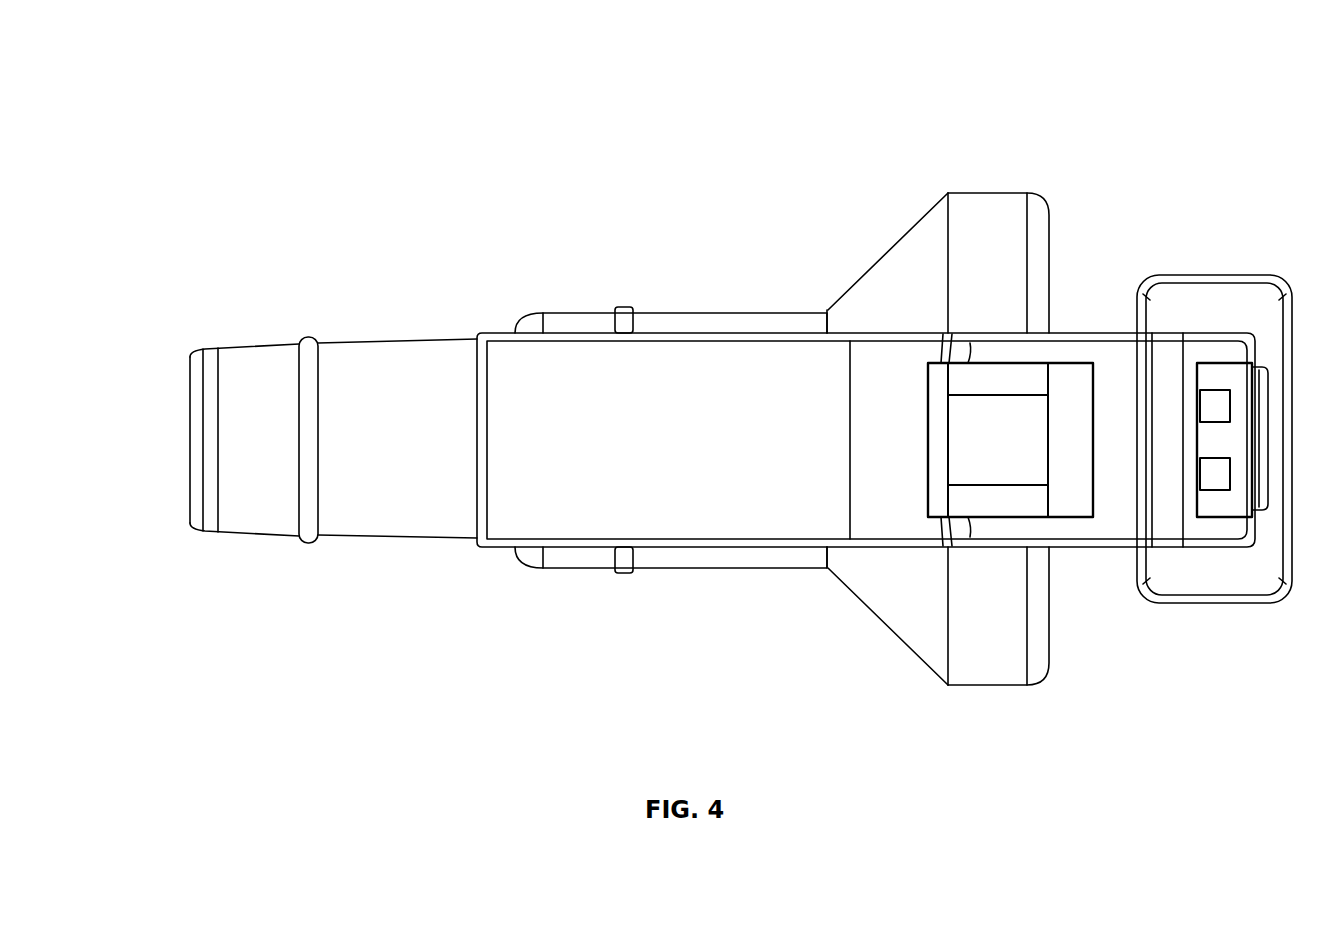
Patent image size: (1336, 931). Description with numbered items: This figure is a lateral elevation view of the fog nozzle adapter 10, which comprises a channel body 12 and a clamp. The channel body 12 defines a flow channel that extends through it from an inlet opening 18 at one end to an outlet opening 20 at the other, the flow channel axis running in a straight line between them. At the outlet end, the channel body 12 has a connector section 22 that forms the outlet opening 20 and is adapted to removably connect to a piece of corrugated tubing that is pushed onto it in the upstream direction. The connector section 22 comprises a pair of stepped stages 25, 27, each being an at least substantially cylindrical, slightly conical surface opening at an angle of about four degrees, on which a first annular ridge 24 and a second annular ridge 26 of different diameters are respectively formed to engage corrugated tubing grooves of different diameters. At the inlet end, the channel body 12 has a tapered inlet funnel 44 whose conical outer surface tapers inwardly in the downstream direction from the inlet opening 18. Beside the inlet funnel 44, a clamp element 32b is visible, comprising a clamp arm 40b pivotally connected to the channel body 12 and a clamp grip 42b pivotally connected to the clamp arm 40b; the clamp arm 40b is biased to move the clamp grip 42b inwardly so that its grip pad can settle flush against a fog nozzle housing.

The fog nozzle adapter 10 is at (197, 93).
The channel body 12 is at (864, 256).
The inlet opening 18 is at (1037, 233).
The outlet opening 20 is at (197, 406).
The connector section 22 is at (688, 311).
The first annular ridge 24 is at (305, 337).
The stepped stage 25 is at (276, 415).
The second annular ridge 26 is at (623, 307).
The stepped stage 27 is at (590, 326).
The clamp element 32b is at (1129, 549).
The clamp arm 40b is at (707, 508).
The clamp grip 42b is at (1215, 296).
The tapered inlet funnel 44 is at (903, 233).